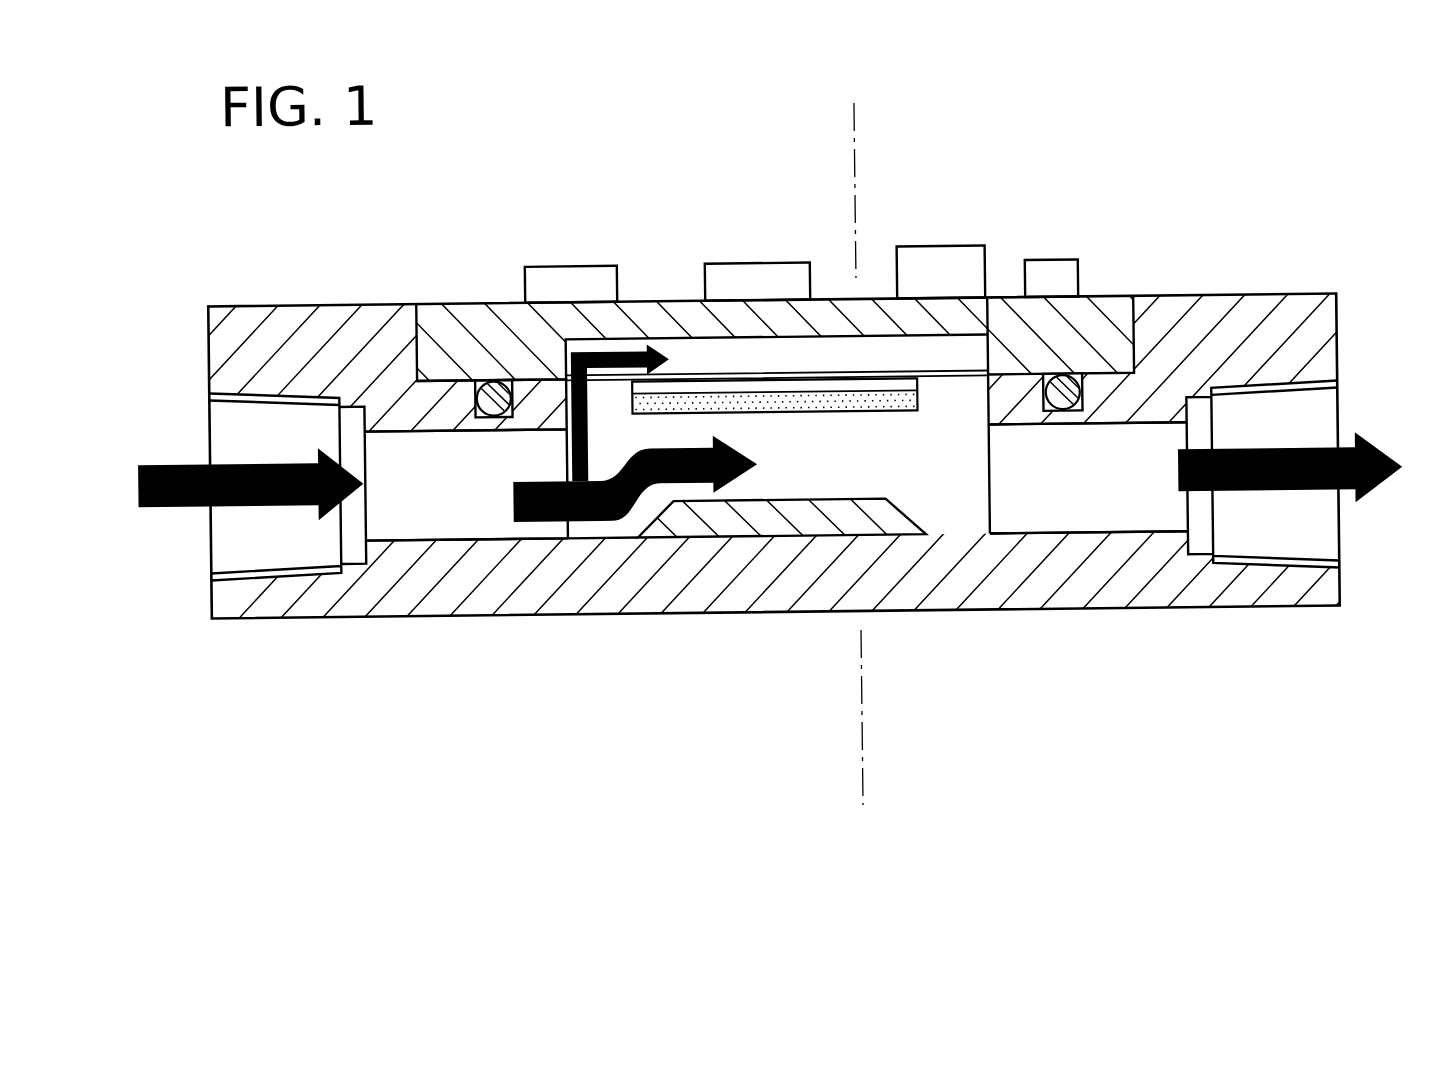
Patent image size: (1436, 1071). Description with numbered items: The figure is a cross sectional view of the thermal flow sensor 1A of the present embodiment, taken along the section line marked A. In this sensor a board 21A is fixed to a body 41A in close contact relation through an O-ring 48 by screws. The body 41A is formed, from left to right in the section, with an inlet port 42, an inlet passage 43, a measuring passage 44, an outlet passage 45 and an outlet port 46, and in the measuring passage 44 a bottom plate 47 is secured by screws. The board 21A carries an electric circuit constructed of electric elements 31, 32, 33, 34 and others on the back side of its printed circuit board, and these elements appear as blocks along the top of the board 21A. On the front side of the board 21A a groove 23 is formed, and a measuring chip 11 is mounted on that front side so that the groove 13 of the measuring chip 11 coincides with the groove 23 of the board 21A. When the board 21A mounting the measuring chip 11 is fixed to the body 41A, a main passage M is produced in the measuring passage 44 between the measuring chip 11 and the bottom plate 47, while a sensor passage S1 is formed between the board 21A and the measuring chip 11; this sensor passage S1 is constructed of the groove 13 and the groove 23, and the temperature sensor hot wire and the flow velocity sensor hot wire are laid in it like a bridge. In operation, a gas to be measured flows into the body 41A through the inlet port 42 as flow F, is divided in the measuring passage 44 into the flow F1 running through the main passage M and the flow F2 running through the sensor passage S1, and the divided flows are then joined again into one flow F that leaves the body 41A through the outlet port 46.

The thermal flow sensor 1A is at (1275, 163).
The measuring chip 11 is at (839, 401).
The groove 13 is at (684, 387).
The groove 23 is at (701, 356).
The sensor passage S1 is at (642, 126).
The board 21A is at (1105, 309).
The electric element 31 is at (754, 278).
The electric element 32 is at (585, 278).
The electric element 33 is at (945, 260).
The electric element 34 is at (1059, 276).
The body 41A is at (722, 600).
The inlet port 42 is at (217, 542).
The inlet passage 43 is at (466, 517).
The measuring passage 44 is at (622, 525).
The outlet passage 45 is at (1035, 496).
The outlet port 46 is at (1329, 543).
The bottom plate 47 is at (804, 522).
The O-ring 48 is at (493, 389).
The gas flow F is at (165, 456).
The main passage gas flow F1 is at (527, 520).
The sensor passage gas flow F2 is at (643, 317).
The main passage M is at (807, 467).
The section line A- A is at (812, 118).